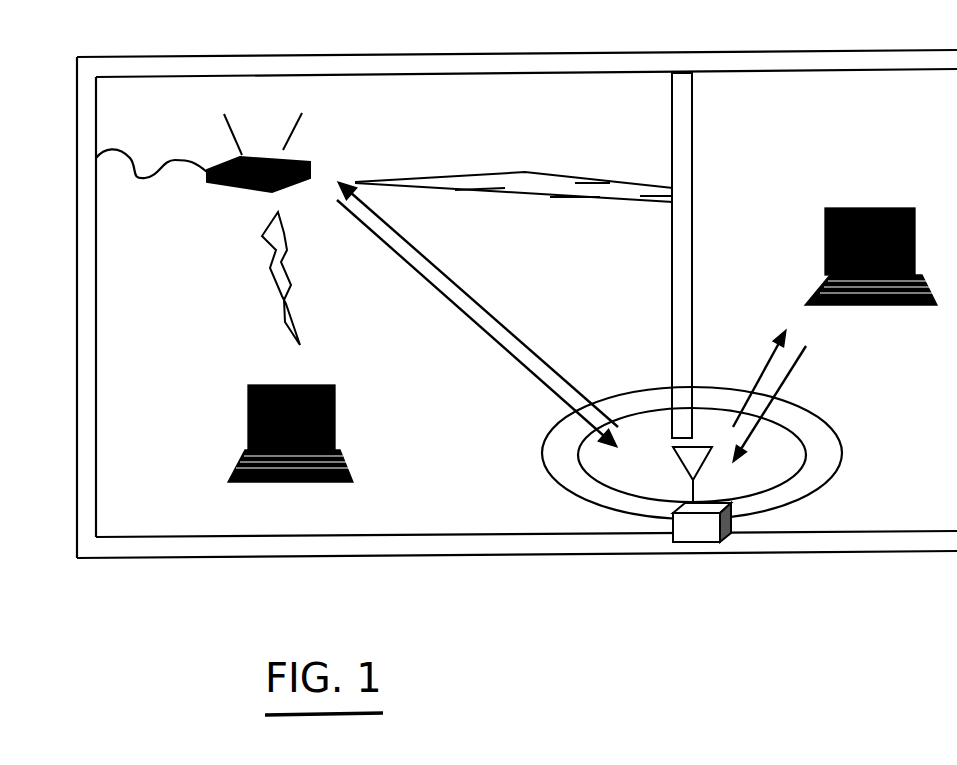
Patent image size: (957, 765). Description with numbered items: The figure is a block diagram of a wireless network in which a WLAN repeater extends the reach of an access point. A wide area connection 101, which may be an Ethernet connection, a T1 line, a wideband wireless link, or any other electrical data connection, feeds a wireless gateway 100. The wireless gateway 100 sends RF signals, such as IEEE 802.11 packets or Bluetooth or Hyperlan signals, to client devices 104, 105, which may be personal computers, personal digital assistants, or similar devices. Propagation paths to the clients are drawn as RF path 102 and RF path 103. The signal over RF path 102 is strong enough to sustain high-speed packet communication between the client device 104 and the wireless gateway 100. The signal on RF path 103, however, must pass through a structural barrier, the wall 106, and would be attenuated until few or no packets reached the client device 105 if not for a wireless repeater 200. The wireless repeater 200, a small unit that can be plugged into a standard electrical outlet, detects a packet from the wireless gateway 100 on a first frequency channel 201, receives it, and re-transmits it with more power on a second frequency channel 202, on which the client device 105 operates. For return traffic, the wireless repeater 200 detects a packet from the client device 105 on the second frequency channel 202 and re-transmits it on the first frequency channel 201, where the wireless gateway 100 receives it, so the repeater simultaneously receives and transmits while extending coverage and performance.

The wireless gateway 100 is at (300, 143).
The wide area connection 101 is at (133, 153).
The RF path 102 is at (300, 287).
The RF path 103 is at (560, 172).
The client device 104 is at (337, 450).
The client device 105 is at (920, 280).
The wall 106 is at (667, 293).
The wireless repeater 200 is at (713, 535).
The first frequency channel 201 is at (486, 291).
The second frequency channel 202 is at (805, 382).